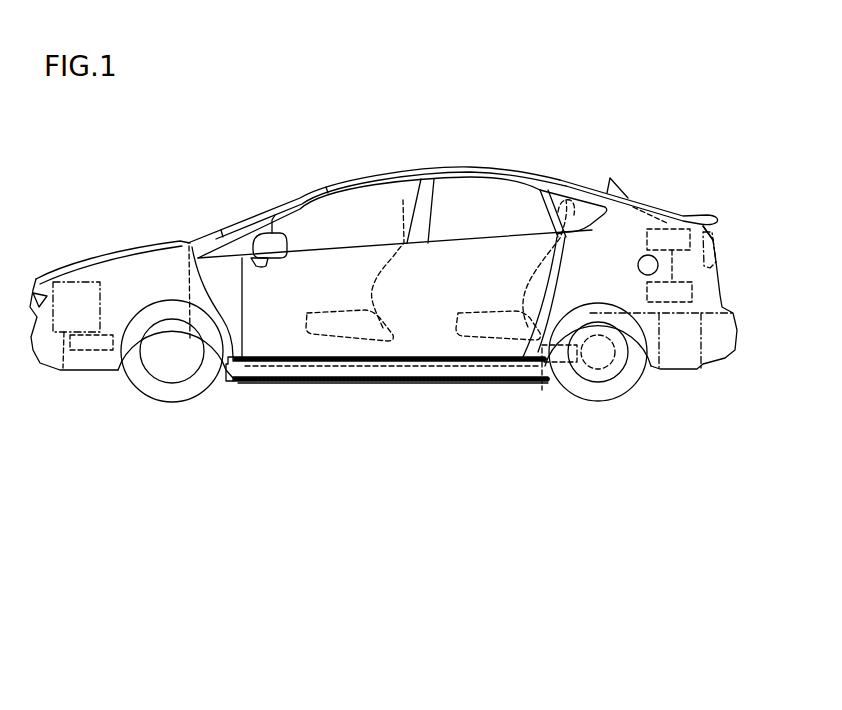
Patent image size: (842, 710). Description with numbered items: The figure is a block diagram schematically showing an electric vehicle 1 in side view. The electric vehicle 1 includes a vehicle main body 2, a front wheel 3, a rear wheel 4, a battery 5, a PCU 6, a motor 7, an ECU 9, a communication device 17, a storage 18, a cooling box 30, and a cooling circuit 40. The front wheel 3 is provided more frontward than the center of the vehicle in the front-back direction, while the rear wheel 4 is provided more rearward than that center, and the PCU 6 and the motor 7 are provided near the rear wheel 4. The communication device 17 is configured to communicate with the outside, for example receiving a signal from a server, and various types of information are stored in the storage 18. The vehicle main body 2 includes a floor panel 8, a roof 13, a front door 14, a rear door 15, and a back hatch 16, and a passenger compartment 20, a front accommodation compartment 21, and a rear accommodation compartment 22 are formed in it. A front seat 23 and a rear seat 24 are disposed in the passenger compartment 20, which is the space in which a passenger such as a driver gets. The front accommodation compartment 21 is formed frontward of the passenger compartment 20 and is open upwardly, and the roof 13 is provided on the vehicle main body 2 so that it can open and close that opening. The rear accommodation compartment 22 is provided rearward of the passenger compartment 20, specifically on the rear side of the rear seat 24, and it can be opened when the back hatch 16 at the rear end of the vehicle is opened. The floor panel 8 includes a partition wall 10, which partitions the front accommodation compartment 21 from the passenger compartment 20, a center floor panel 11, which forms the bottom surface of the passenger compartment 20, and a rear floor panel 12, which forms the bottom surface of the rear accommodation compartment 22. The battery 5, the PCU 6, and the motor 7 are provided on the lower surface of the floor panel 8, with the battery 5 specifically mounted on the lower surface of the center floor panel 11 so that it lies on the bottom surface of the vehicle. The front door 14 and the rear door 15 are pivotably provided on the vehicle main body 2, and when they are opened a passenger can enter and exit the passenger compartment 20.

The electric vehicle 1 is at (674, 117).
The vehicle main body 2 is at (475, 167).
The front wheel 3 is at (135, 373).
The rear wheel 4 is at (567, 388).
The battery 5 is at (483, 382).
The PCU 6 is at (563, 393).
The motor 7 is at (605, 373).
The floor panel 8 is at (237, 373).
The ECU 9 is at (690, 238).
The partition wall 10 is at (194, 340).
The center floor panel 11 is at (277, 383).
The rear floor panel 12 is at (659, 370).
The roof 13 is at (117, 247).
The front door 14 is at (320, 345).
The rear door 15 is at (433, 345).
The back hatch 16 is at (693, 213).
The communication device 17 is at (620, 187).
The storage 18 is at (692, 292).
The passenger compartment 20 is at (358, 220).
The front accommodation compartment 21 is at (64, 368).
The rear accommodation compartment 22 is at (700, 368).
The front seat 23 is at (412, 178).
The rear seat 24 is at (568, 200).
The cooling box 30 is at (68, 280).
The cooling circuit 40 is at (102, 352).